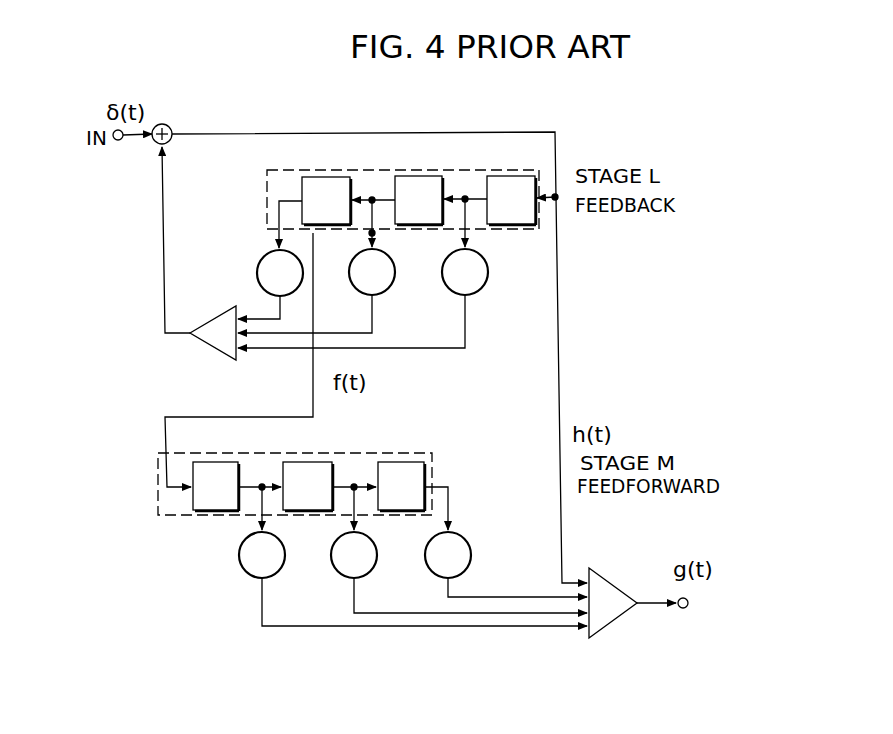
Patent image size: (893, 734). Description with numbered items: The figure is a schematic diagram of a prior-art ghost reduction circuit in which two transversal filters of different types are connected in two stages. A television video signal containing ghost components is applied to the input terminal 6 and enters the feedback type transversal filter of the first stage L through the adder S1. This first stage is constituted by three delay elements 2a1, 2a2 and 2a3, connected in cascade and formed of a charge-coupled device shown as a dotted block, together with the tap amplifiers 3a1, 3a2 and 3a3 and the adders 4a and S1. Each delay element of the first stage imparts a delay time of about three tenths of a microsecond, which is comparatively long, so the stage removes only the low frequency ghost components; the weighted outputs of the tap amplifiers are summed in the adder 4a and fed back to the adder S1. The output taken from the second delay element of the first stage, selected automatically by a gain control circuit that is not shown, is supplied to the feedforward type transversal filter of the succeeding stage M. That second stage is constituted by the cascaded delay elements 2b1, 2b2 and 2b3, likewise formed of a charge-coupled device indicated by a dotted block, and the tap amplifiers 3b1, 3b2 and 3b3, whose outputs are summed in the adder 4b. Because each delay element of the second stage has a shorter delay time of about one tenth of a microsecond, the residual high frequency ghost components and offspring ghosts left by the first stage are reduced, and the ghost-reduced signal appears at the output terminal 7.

The input terminal 6 is at (118, 140).
The adder S1 is at (170, 126).
The delay element 2a1 is at (497, 176).
The delay element 2a2 is at (412, 176).
The delay element 2a3 is at (312, 177).
The tap amplifier 3a1 is at (478, 291).
The tap amplifier 3a2 is at (385, 291).
The tap amplifier 3a3 is at (259, 262).
The adder 4a is at (210, 321).
The delay element 2b1 is at (215, 462).
The delay element 2b2 is at (307, 462).
The delay element 2b3 is at (395, 462).
The tap amplifier 3b1 is at (250, 575).
The tap amplifier 3b2 is at (343, 575).
The tap amplifier 3b3 is at (437, 574).
The adder 4b is at (617, 618).
The output terminal 7 is at (683, 608).